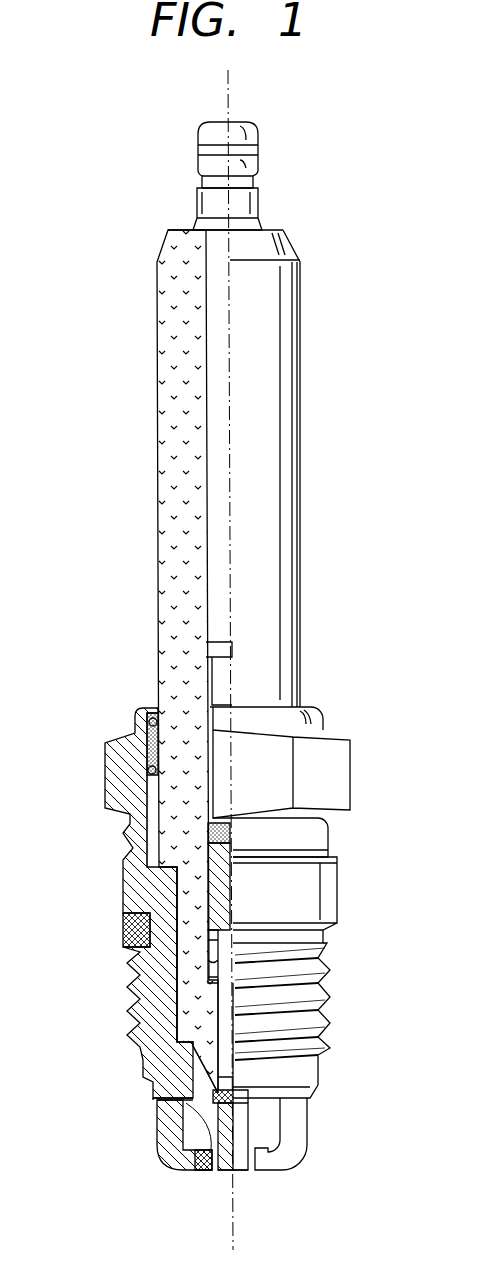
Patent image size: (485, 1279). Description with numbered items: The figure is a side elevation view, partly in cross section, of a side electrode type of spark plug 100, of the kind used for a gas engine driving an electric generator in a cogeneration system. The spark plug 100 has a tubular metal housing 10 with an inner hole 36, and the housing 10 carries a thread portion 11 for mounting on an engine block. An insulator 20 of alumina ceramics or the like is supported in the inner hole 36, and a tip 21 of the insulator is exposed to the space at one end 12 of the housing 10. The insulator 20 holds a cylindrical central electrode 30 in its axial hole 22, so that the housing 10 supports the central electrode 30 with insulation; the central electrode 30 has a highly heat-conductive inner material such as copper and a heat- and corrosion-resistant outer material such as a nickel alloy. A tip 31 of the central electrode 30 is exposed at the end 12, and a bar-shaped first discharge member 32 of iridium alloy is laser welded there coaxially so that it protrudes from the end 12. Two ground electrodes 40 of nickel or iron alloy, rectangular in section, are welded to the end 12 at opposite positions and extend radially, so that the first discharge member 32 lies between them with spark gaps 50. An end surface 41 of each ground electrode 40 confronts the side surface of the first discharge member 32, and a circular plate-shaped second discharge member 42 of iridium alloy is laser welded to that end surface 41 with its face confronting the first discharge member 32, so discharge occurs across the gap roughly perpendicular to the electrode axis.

The spark plug 100 is at (301, 469).
The metal housing 10 is at (216, 932).
The thread portion 11 is at (327, 1000).
The one end of the housing 12 is at (157, 1102).
The insulator 20 is at (185, 707).
The tip of the insulator 21 is at (203, 1094).
The axial hole 22 is at (217, 998).
The central electrode 30 is at (238, 1116).
The tip of the central electrode 31 is at (251, 1104).
The first discharge member 32 is at (240, 1172).
The inner hole 36 is at (162, 1118).
The ground electrode 40 is at (176, 1171).
The end surface of the ground electrode 41 is at (183, 1173).
The second discharge member 42 is at (207, 1173).
The spark gap 50 is at (253, 1168).